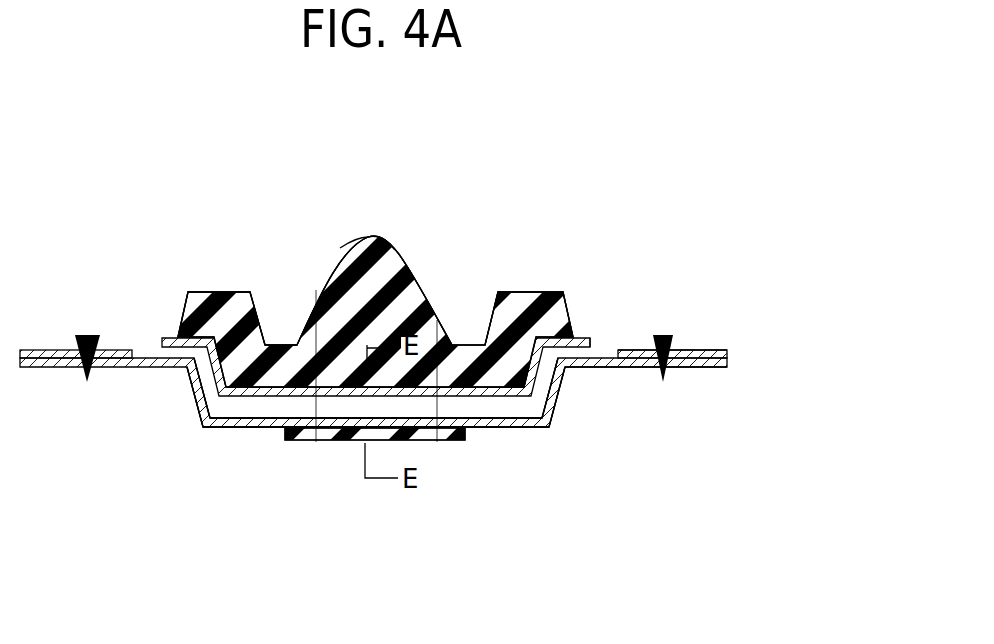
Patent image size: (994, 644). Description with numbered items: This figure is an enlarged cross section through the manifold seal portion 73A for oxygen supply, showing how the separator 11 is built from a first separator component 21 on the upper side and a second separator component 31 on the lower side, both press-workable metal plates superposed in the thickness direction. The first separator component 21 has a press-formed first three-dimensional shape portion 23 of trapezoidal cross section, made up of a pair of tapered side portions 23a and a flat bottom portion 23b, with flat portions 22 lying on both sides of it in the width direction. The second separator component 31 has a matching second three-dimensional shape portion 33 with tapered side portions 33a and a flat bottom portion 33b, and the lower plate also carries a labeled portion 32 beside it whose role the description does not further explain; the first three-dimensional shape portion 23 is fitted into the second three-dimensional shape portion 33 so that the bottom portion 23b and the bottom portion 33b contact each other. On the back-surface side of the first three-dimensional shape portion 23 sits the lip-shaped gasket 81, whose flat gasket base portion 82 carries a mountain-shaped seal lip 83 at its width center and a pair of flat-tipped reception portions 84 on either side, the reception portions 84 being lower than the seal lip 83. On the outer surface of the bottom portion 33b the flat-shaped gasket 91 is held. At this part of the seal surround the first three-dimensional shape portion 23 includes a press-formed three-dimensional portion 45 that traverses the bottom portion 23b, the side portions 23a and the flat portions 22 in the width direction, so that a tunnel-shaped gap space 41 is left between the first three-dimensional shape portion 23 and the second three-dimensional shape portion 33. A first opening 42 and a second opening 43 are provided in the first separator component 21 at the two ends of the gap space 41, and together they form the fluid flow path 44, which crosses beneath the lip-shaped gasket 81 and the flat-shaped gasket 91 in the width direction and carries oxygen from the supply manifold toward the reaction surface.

The separator 11 is at (438, 394).
The first separator component 21 is at (707, 347).
The flat portions 22 is at (637, 350).
The first three-dimensional shape portion 23 is at (483, 397).
The side portions 23a is at (195, 378).
The bottom portion 23b is at (462, 397).
The second separator component 31 is at (708, 373).
The second wiring layer 32 is at (637, 368).
The second three-dimensional shape portion 33 is at (243, 427).
The side portions 33a is at (200, 397).
The bottom portion 33b is at (267, 425).
The gap space 41 is at (317, 407).
The first opening 42 is at (160, 338).
The second opening 43 is at (596, 345).
The fluid flow path 44 is at (437, 408).
The three-dimensional portion 45 is at (308, 332).
The manifold seal portion for oxygen supply 73A is at (128, 245).
The lip-shaped gasket 81 is at (368, 237).
The gasket base portion 82 is at (437, 333).
The seal lip 83 is at (358, 290).
The reception portions 84 is at (232, 302).
The flat-shaped gasket 91 is at (330, 430).